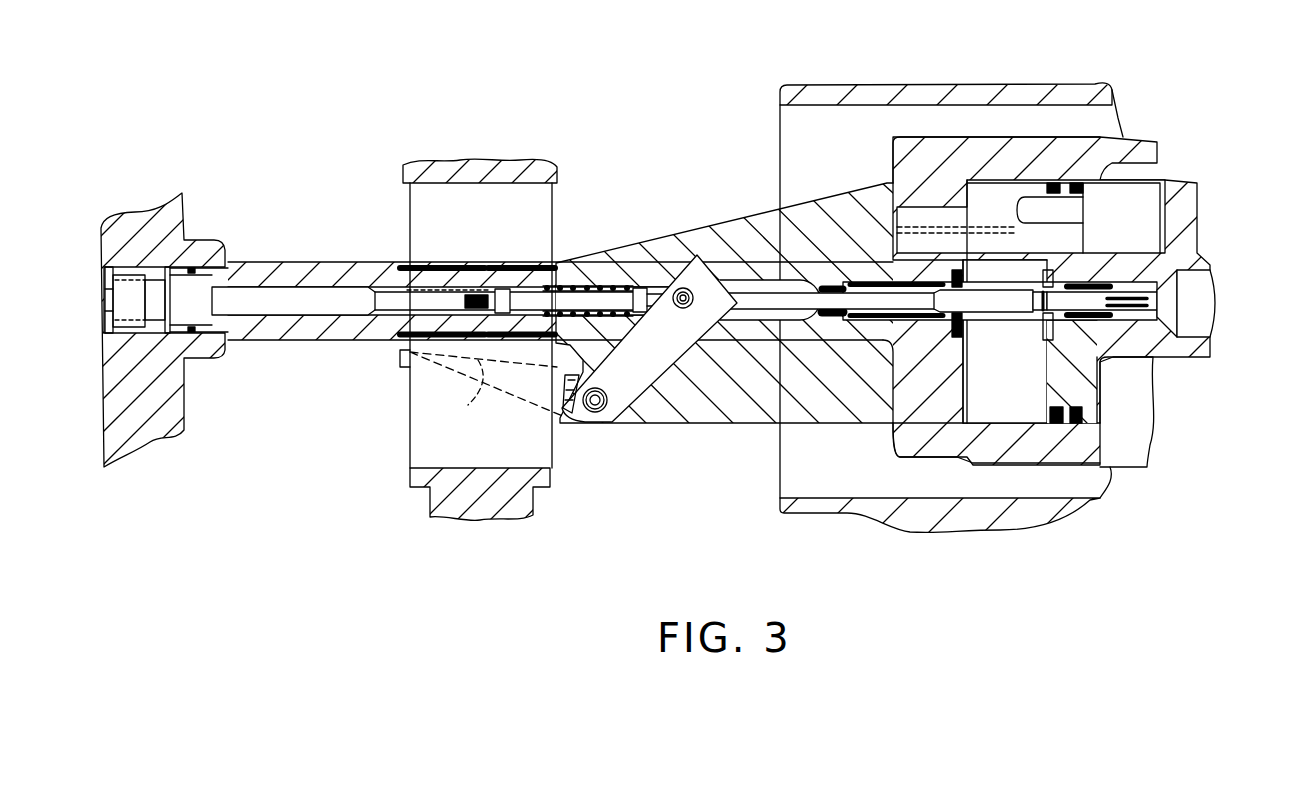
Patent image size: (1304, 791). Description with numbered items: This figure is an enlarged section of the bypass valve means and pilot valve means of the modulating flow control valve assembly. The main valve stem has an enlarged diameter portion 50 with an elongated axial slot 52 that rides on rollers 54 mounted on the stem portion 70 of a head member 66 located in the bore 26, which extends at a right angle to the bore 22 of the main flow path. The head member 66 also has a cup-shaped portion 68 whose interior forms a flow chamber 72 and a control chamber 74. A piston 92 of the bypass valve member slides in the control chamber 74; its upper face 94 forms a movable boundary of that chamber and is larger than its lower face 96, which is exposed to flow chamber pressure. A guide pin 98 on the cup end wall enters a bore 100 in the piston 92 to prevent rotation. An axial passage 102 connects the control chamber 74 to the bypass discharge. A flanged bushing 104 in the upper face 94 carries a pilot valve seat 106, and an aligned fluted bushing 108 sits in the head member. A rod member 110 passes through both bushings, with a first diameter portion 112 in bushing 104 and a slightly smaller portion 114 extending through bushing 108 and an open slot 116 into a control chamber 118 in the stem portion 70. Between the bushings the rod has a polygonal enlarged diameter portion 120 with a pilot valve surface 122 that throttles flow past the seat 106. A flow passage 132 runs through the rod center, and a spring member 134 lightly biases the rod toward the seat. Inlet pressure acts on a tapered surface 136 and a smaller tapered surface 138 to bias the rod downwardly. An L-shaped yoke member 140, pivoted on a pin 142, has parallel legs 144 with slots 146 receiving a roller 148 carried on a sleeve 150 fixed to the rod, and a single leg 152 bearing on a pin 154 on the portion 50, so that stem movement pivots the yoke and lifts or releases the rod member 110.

The bore 22 is at (188, 396).
The bore 26 is at (826, 503).
The enlarged diameter portion 50 is at (408, 452).
The elongated axial slot 52 is at (430, 443).
The rollers 54 is at (400, 264).
The head member 66 is at (693, 423).
The cup-shaped portion 68 is at (1067, 457).
The stem portion 70 is at (762, 355).
The flow chamber 72 is at (1117, 430).
The control chamber 74 is at (973, 407).
The piston 92 is at (1053, 387).
The upper face 94 is at (1047, 272).
The lower face 96 is at (1100, 393).
The guide pin 98 is at (1057, 182).
The bore 100 is at (1030, 210).
The passage 102 is at (1200, 320).
The bushing 104 is at (1087, 320).
The valve seat 106 is at (1060, 284).
The bushing 108 is at (957, 283).
The rod member 110 is at (772, 286).
The first diameter portion 112 is at (1157, 298).
The second diameter portion 114 is at (762, 293).
The open slot 116 is at (753, 317).
The control chamber 118 is at (380, 262).
The enlarged diameter portion 120 is at (970, 303).
The pilot valve surface 122 is at (1037, 313).
The flow passage 132 is at (1155, 303).
The spring member 134 is at (545, 318).
The tapered surface 136 is at (853, 313).
The tapered surface 138 is at (1033, 310).
The yoke member 140 is at (578, 421).
The pin 142 is at (610, 421).
The legs 144 is at (627, 383).
The slot 146 is at (678, 290).
The roller 148 is at (680, 288).
The sleeve 150 is at (645, 318).
The leg 152 is at (395, 362).
The pin 154 is at (468, 367).